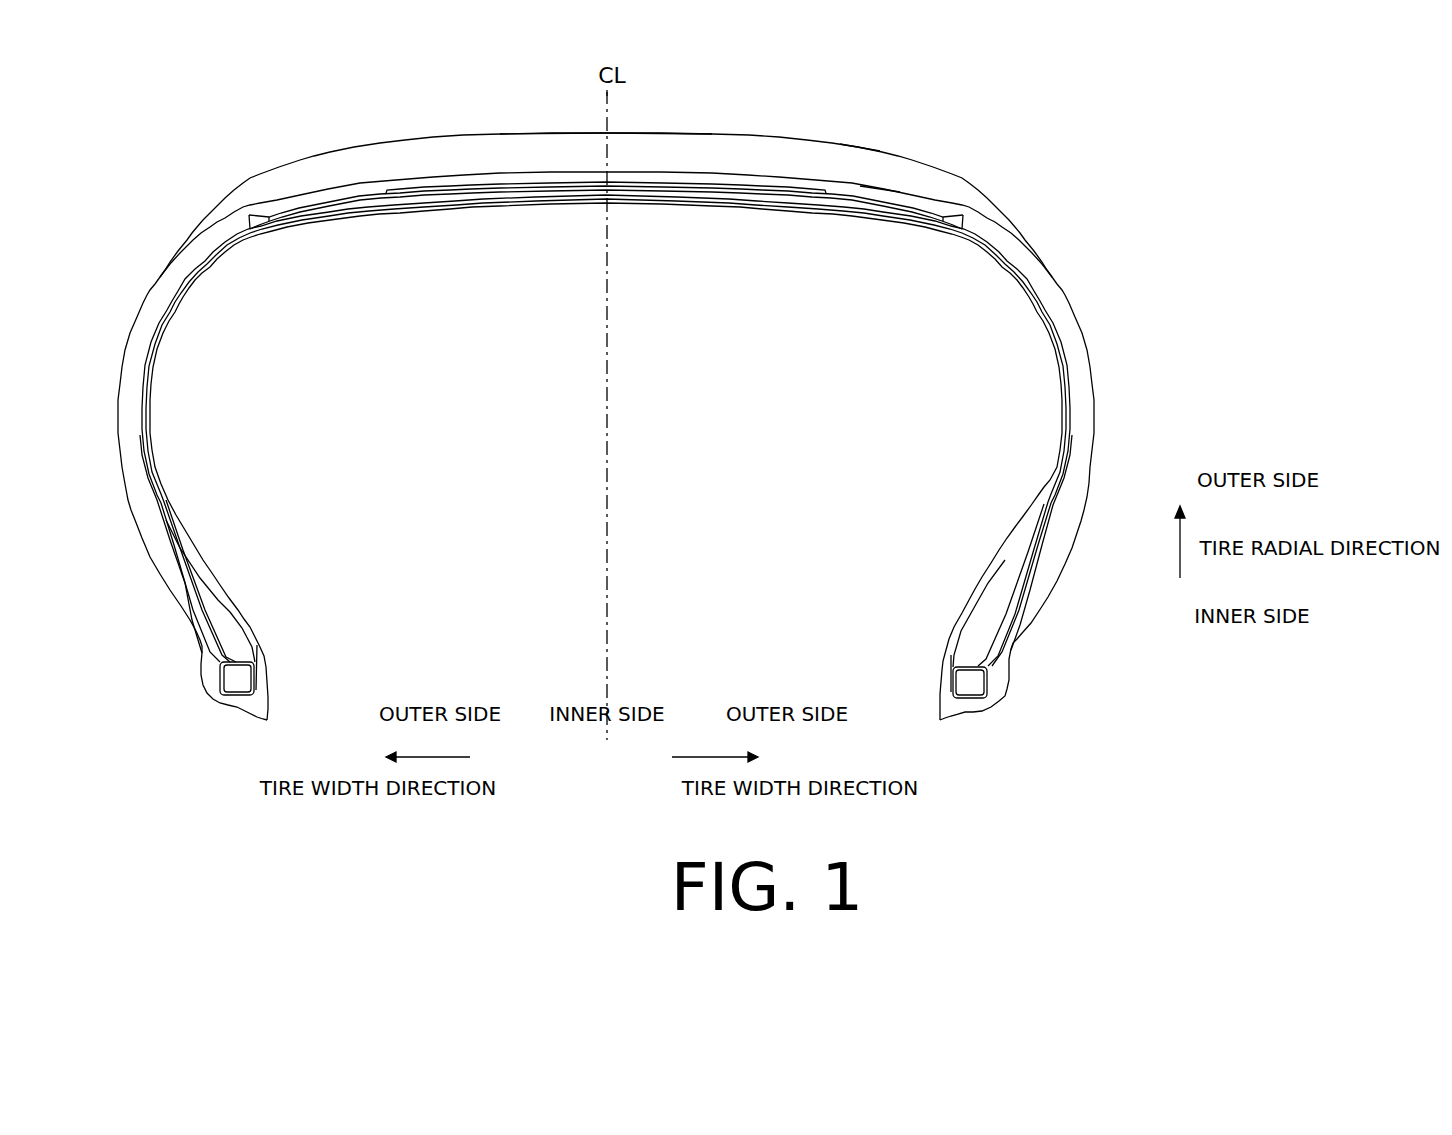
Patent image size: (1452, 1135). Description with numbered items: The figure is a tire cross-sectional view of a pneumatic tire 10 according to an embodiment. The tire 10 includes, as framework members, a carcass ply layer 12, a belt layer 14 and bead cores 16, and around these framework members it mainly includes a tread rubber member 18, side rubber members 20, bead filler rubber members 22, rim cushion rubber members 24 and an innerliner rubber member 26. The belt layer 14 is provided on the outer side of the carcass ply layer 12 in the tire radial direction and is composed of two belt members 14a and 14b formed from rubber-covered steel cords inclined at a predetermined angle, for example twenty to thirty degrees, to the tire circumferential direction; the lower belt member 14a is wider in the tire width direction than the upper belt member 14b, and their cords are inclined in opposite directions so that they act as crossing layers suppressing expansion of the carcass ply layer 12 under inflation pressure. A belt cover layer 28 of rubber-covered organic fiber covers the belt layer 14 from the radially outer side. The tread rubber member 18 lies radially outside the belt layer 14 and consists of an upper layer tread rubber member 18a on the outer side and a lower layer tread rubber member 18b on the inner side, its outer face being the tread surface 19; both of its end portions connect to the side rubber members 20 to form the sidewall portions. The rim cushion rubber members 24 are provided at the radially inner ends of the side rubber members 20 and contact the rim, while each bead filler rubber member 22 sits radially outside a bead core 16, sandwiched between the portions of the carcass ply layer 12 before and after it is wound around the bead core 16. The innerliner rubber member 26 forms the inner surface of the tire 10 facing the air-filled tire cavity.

The pneumatic tire 10 is at (949, 89).
The carcass ply layer 12 is at (222, 265).
The belt layer 14 is at (648, 248).
The belt member 14a is at (697, 194).
The belt member 14b is at (660, 188).
The bead core 16 is at (244, 681).
The tread rubber member 18 is at (917, 109).
The upper layer tread rubber member 18a is at (863, 164).
The lower layer tread rubber member 18b is at (880, 193).
The tread surface 19 is at (648, 133).
The side rubber member 20 is at (148, 513).
The bead filler rubber member 22 is at (226, 626).
The rim cushion rubber member 24 is at (210, 660).
The innerliner rubber member 26 is at (150, 397).
The belt cover layer 28 is at (408, 191).